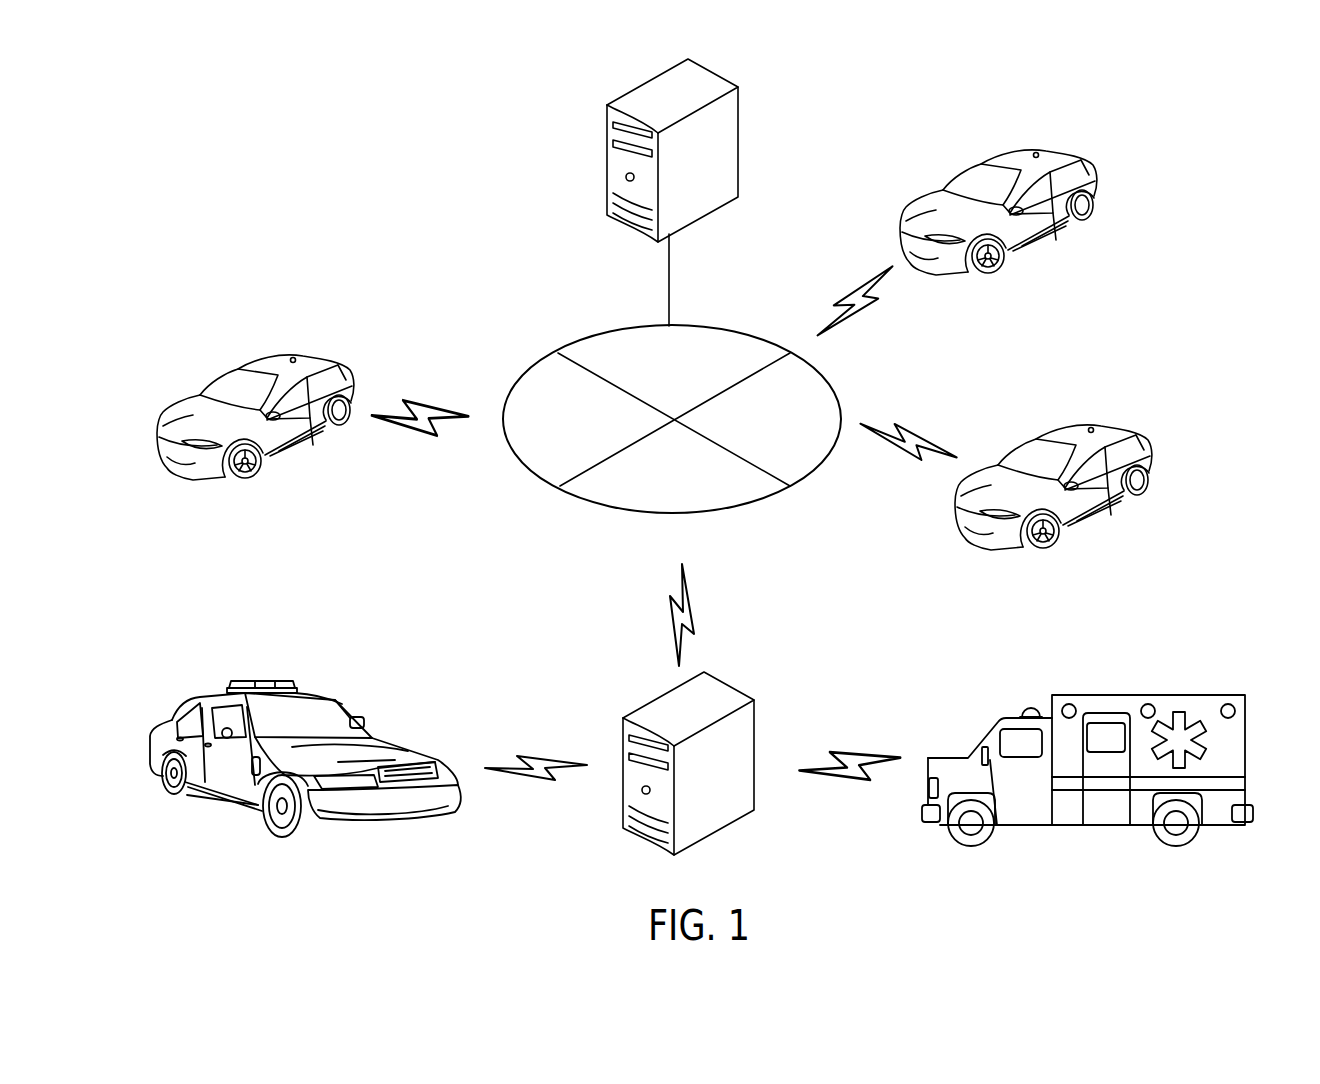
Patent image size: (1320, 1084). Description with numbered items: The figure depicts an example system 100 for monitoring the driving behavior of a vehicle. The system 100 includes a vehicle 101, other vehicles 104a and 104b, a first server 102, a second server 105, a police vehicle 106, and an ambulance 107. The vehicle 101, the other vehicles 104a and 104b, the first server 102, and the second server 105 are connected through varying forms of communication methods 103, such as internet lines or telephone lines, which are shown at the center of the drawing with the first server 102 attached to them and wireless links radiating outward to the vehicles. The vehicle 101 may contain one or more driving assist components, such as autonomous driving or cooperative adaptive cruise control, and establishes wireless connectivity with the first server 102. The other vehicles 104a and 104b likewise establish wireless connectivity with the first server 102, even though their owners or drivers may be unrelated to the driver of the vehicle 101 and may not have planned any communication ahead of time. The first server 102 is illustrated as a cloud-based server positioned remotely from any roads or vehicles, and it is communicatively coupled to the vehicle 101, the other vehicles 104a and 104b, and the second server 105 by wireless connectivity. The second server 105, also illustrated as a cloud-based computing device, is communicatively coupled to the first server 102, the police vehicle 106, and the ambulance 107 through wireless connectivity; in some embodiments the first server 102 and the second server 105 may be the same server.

The system 100 is at (284, 165).
The vehicle 101 is at (272, 353).
The first server 102 is at (740, 110).
The communication methods 103 is at (733, 327).
The other vehicle 104a is at (1096, 174).
The other vehicle 104b is at (1077, 425).
The second server 105 is at (755, 723).
The police vehicle 106 is at (287, 680).
The ambulance 107 is at (1140, 695).